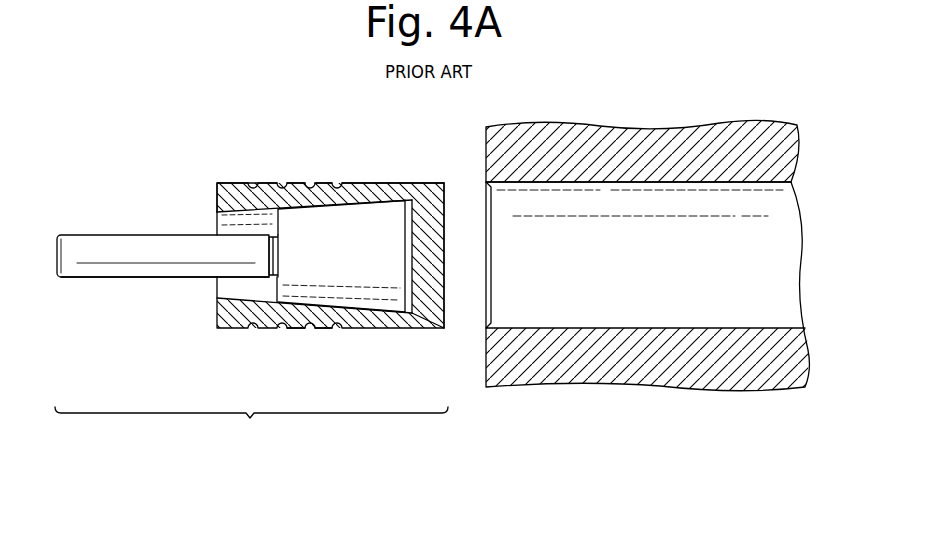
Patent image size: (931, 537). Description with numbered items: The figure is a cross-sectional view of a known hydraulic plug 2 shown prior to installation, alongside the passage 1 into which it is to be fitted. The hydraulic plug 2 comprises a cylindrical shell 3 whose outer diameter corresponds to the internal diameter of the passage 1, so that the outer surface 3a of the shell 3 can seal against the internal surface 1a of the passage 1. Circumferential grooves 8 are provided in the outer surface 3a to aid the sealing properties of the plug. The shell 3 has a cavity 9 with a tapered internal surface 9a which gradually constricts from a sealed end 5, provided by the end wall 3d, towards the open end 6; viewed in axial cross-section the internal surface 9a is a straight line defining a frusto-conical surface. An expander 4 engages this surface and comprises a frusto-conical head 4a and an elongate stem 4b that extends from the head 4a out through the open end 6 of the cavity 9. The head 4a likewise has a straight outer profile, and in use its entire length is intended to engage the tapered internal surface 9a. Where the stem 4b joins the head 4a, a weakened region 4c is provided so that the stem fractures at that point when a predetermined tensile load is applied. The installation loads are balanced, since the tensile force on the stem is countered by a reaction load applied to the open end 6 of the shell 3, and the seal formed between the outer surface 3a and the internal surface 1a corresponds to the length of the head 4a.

The passage 1 is at (753, 279).
The internal surface of the passage 1a is at (606, 182).
The hydraulic plug 2 is at (251, 427).
The cylindrical shell 3 is at (241, 183).
The outer surface of the shell 3a is at (377, 183).
The end wall 3d is at (445, 302).
The expander 4 is at (73, 235).
The frusto-conical head 4a is at (322, 230).
The elongate stem 4b is at (97, 278).
The weakened region 4c is at (275, 275).
The sealed end 5 is at (444, 200).
The open end 6 is at (217, 190).
The circumferential grooves 8 is at (310, 330).
The cavity 9 is at (228, 288).
The tapered internal surface 9a is at (225, 223).